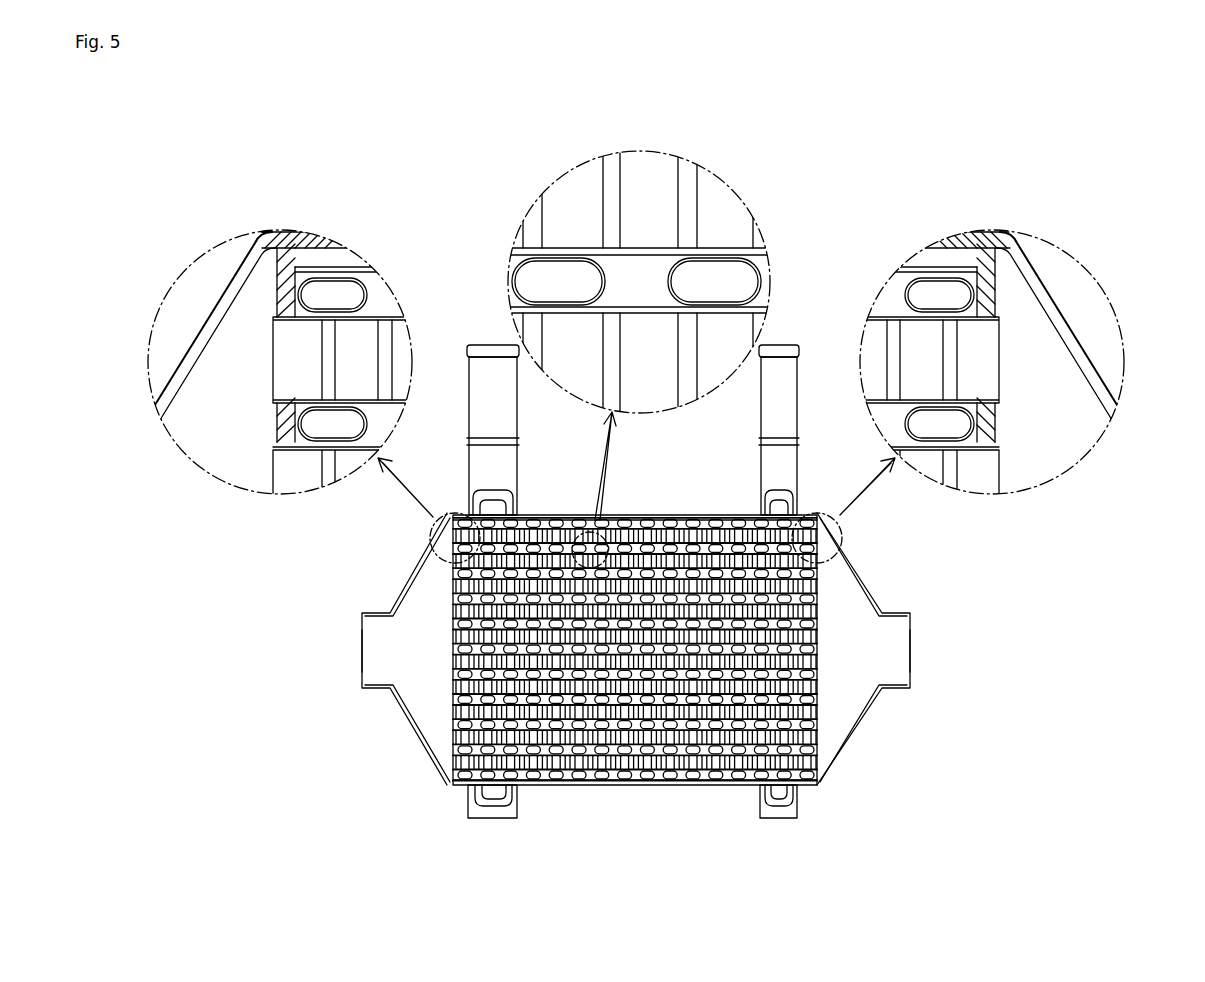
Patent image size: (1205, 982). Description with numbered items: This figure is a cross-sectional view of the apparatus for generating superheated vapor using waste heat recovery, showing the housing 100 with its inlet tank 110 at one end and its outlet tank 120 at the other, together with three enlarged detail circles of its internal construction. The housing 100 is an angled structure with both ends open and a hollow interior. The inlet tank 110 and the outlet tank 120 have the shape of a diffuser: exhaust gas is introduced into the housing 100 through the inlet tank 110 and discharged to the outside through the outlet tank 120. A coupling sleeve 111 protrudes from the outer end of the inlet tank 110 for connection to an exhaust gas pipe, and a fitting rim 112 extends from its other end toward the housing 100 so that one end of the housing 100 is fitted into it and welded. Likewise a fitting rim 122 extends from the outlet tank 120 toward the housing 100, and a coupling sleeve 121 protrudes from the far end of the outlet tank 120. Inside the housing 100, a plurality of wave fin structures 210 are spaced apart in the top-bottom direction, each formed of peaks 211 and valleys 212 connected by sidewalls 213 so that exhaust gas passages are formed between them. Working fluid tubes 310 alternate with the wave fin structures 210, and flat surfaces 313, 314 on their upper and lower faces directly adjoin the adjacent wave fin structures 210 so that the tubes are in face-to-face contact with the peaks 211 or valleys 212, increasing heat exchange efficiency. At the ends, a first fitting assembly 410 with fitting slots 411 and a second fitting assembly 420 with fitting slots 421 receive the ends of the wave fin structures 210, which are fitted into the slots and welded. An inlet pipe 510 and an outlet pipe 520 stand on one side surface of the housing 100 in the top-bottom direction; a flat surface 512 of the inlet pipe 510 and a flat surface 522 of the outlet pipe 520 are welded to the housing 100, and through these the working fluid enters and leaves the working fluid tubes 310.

The housing 100 is at (684, 510).
The inlet tank 110 is at (404, 559).
The coupling sleeve 111 is at (375, 690).
The fitting rim 112 is at (463, 790).
The outlet tank 120 is at (874, 577).
The coupling sleeve 121 is at (892, 690).
The fitting rim 122 is at (803, 790).
The wave fin structure 210 is at (267, 362).
The peak 211 is at (400, 319).
The valley 212 is at (396, 404).
The sidewall 213 is at (723, 227).
The working fluid tube 310 is at (374, 292).
The flat surface 313 is at (549, 248).
The flat surface 314 is at (535, 307).
The first fitting assembly 410 is at (283, 292).
The fitting slot 411 is at (270, 345).
The second fitting assembly 420 is at (988, 292).
The fitting slot 421 is at (988, 322).
The inlet pipe 510 is at (765, 455).
The flat surface 512 is at (785, 500).
The outlet pipe 520 is at (506, 455).
The flat surface 522 is at (490, 512).